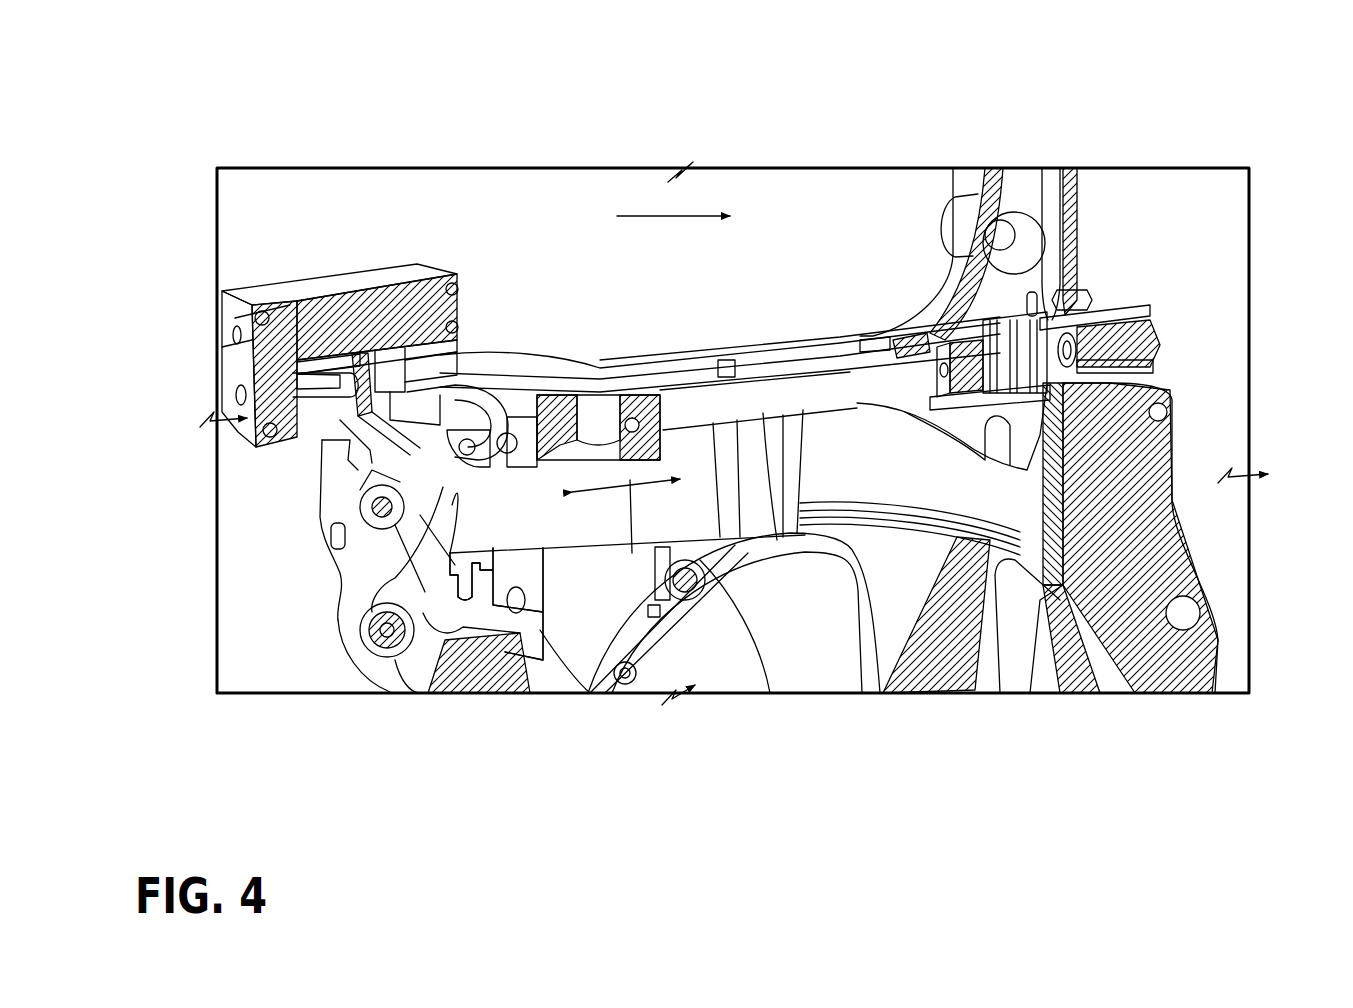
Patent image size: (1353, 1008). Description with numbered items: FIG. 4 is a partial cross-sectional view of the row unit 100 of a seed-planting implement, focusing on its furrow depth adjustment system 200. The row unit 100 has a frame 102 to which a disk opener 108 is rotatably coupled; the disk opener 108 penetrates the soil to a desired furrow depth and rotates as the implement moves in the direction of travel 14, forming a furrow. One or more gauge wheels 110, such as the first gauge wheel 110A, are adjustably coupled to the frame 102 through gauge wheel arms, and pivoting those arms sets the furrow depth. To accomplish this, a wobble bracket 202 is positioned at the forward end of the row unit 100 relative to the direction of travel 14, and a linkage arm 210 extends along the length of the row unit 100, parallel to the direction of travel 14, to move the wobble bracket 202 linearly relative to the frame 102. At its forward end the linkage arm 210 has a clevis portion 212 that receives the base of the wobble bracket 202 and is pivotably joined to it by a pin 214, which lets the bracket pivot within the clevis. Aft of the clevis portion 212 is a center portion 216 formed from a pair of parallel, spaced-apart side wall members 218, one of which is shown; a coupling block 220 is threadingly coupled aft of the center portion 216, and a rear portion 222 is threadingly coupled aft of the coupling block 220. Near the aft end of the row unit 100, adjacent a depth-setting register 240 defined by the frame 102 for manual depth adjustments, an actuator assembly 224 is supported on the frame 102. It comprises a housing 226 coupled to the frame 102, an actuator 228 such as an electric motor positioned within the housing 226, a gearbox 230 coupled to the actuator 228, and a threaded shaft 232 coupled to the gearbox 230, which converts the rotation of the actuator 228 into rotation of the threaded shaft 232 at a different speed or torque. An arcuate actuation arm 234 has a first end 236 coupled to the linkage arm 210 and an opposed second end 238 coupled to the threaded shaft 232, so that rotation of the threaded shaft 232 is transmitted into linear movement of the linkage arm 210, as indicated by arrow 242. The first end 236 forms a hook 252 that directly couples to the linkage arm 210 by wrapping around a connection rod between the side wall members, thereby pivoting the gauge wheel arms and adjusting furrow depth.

The row unit 100 is at (214, 116).
The direction of travel 14 is at (688, 217).
The frame 102 is at (396, 655).
The disk opener 108 is at (750, 645).
The gauge wheel 110 is at (557, 673).
The first gauge wheel 110A is at (496, 604).
The furrow depth adjustment system 200 is at (1097, 268).
The wobble bracket 202 is at (1153, 342).
The linkage arm 210 is at (717, 353).
The clevis portion 212 is at (1100, 317).
The pin 214 is at (1112, 307).
The center portion 216 is at (858, 412).
The side wall member 218 is at (822, 548).
The coupling block 220 is at (567, 407).
The rear portion 222 is at (523, 403).
The actuator assembly 224 is at (264, 258).
The housing 226 is at (340, 282).
The actuator 228 is at (402, 262).
The gearbox 230 is at (237, 352).
The threaded shaft 232 is at (420, 373).
The actuation arm 234 is at (350, 665).
The first end 236 is at (500, 485).
The second end 238 is at (325, 418).
The depth-setting register 240 is at (333, 562).
The arrow 242 is at (647, 617).
The hook 252 is at (480, 407).